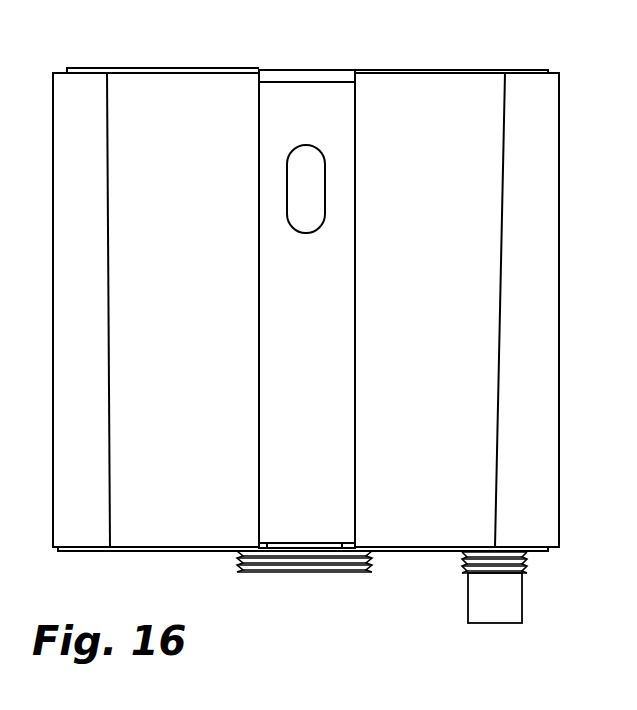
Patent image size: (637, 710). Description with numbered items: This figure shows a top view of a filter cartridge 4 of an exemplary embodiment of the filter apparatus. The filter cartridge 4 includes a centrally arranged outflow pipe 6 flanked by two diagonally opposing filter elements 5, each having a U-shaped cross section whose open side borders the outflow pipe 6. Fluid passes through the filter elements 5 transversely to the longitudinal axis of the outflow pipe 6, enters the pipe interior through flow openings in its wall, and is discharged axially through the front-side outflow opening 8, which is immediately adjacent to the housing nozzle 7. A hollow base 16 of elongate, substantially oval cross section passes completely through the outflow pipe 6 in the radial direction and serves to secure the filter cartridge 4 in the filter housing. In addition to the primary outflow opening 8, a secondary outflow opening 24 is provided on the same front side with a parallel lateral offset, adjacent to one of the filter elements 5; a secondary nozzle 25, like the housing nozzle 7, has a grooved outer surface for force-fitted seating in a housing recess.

The filter cartridge 4 is at (560, 61).
The filter element 5 is at (173, 90).
The outflow pipe 6 is at (311, 298).
The housing nozzle 7 is at (252, 567).
The outflow opening 8 is at (305, 540).
The hollow base 16 is at (310, 183).
The secondary outflow opening 24 is at (482, 542).
The secondary nozzle 25 is at (467, 608).